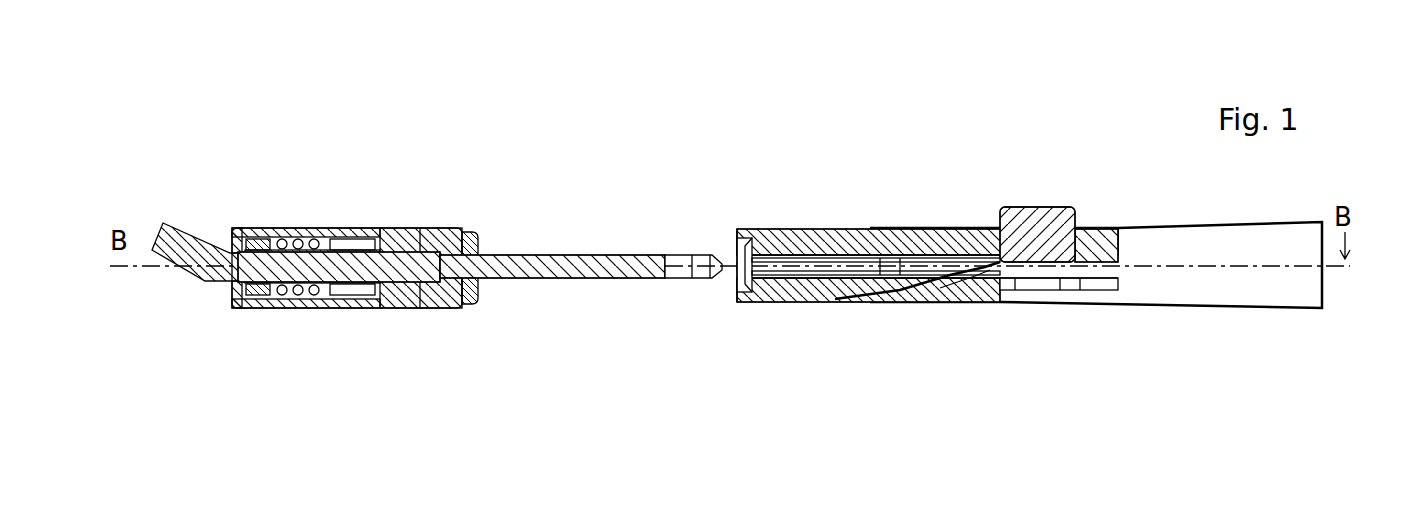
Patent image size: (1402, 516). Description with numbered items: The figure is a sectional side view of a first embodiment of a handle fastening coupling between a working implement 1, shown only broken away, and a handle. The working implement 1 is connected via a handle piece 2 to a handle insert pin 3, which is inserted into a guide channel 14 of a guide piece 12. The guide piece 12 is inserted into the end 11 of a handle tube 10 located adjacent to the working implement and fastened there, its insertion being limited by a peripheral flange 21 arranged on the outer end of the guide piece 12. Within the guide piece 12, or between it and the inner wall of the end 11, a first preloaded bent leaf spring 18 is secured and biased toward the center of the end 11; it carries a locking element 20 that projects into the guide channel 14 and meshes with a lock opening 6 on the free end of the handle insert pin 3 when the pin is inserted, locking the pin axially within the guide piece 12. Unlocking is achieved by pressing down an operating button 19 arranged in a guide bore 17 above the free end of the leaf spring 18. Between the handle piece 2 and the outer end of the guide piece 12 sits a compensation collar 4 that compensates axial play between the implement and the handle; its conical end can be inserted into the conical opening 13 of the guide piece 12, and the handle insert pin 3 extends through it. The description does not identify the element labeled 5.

The working implement 1 is at (188, 233).
The handle piece 2 is at (393, 228).
The handle insert pin 3 is at (547, 280).
The compensation collar 4 is at (478, 307).
The spring 5 is at (348, 307).
The lock opening 6 is at (684, 280).
The handle tube 10 is at (1188, 320).
The end of the handle tube 11 is at (900, 228).
The guide piece 12 is at (727, 216).
The conical opening 13 is at (738, 279).
The guide channel 14 is at (798, 262).
The guide bore 17 is at (1083, 231).
The leaf spring 18 is at (923, 287).
The operating button 19 is at (1040, 207).
The locking element 20 is at (960, 282).
The peripheral flange 21 is at (742, 302).